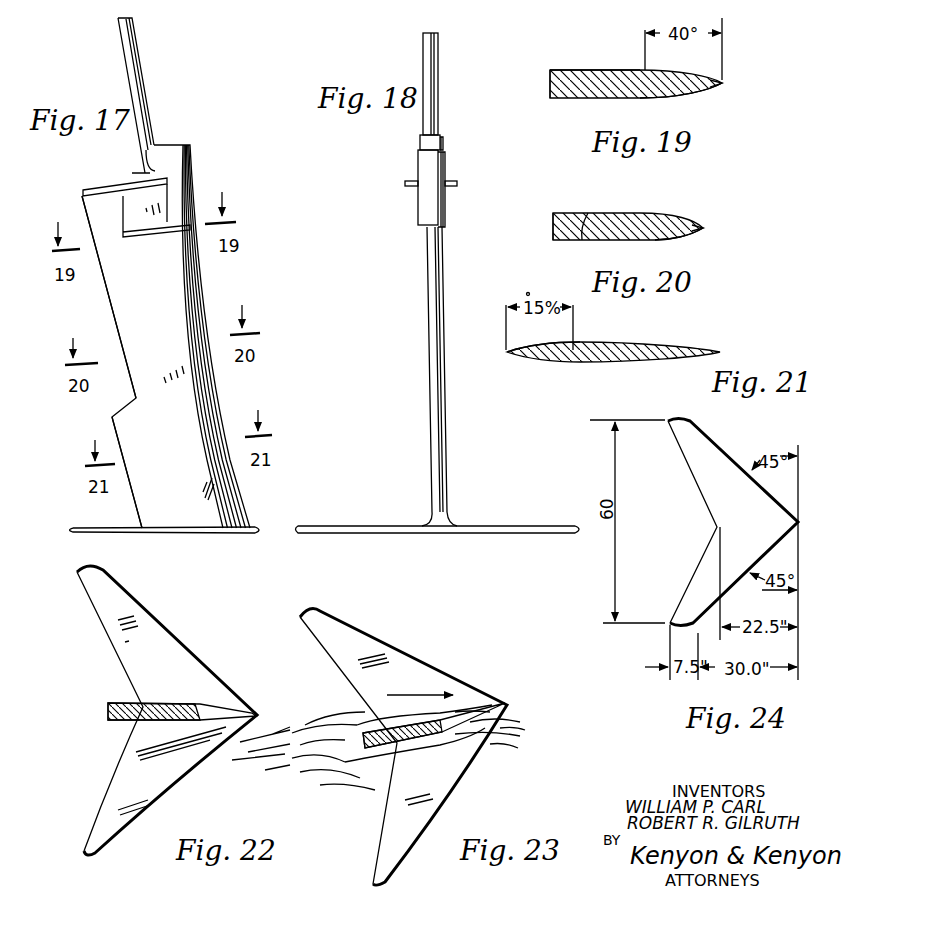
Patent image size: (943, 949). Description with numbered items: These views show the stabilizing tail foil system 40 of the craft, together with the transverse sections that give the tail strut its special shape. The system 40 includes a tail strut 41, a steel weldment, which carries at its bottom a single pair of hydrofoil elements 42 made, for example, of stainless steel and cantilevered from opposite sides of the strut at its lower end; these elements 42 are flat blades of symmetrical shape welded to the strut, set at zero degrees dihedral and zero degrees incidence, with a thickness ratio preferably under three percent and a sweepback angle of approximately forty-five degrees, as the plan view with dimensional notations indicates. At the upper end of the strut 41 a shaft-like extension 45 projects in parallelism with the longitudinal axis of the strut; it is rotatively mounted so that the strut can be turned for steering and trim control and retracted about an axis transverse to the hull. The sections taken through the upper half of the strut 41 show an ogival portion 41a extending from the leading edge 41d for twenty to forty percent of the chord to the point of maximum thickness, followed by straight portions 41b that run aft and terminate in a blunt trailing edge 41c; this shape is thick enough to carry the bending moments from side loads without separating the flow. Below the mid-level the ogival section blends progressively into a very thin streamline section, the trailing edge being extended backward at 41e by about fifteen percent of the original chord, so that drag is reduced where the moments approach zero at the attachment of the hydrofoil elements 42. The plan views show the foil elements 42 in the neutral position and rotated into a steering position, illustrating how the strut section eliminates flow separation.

In FIG. 17, the stabilizing tail foil system 40 is at (220, 291).
In FIG. 18, the stabilizing tail foil system 40 is at (418, 445).
In FIG. 17, the tail strut 41 is at (205, 389).
In FIG. 18, the tail strut 41 is at (428, 274).
In FIG. 19, the tail strut 41 is at (592, 74).
In FIG. 20, the tail strut 41 is at (605, 216).
In FIG. 21, the tail strut 41 is at (627, 343).
In FIG. 22, the tail strut 41 is at (130, 721).
In FIG. 23, the tail strut 41 is at (393, 748).
In FIG. 19, the ogival portion 41a is at (698, 92).
In FIG. 20, the ogival portion 41a is at (690, 238).
In FIG. 19, the straight portions 41b is at (572, 72).
In FIG. 20, the straight portions 41b is at (586, 240).
In FIG. 17, the blunt trailing edge 41c is at (116, 322).
In FIG. 19, the blunt trailing edge 41c is at (550, 86).
In FIG. 20, the blunt trailing edge 41c is at (551, 228).
In FIG. 19, the leading edge 41d is at (724, 83).
In FIG. 20, the leading edge 41d is at (705, 228).
In FIG. 17, the extended trailing edge 41e is at (113, 428).
In FIG. 21, the extended trailing edge 41e is at (556, 361).
In FIG. 17, the hydrofoil elements 42 is at (136, 533).
In FIG. 18, the hydrofoil elements 42 is at (468, 535).
In FIG. 24, the hydrofoil elements 42 is at (714, 477).
In FIG. 22, the hydrofoil elements 42 is at (170, 640).
In FIG. 23, the hydrofoil elements 42 is at (370, 640).
In FIG. 17, the shaft-like extension 45 is at (143, 65).
In FIG. 18, the shaft-like extension 45 is at (438, 78).